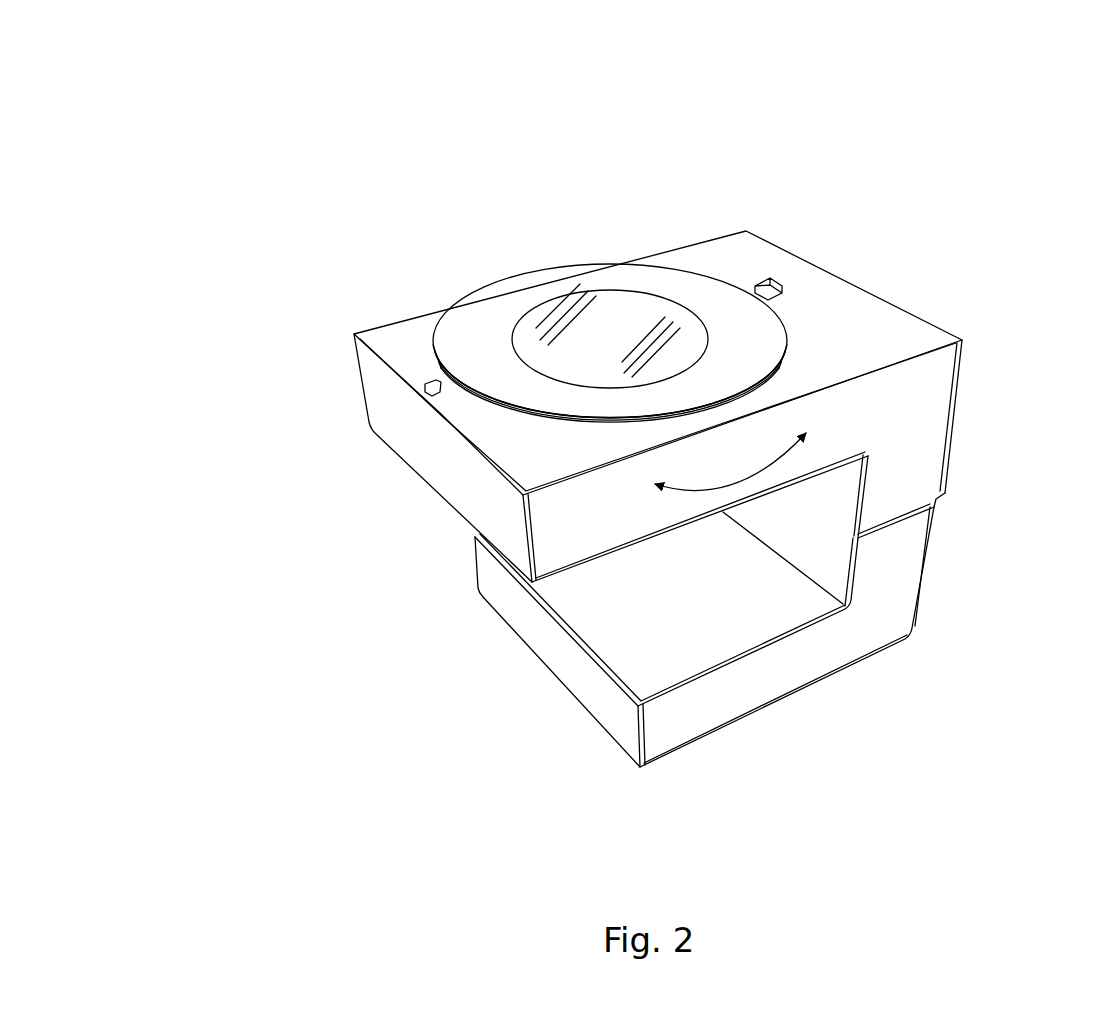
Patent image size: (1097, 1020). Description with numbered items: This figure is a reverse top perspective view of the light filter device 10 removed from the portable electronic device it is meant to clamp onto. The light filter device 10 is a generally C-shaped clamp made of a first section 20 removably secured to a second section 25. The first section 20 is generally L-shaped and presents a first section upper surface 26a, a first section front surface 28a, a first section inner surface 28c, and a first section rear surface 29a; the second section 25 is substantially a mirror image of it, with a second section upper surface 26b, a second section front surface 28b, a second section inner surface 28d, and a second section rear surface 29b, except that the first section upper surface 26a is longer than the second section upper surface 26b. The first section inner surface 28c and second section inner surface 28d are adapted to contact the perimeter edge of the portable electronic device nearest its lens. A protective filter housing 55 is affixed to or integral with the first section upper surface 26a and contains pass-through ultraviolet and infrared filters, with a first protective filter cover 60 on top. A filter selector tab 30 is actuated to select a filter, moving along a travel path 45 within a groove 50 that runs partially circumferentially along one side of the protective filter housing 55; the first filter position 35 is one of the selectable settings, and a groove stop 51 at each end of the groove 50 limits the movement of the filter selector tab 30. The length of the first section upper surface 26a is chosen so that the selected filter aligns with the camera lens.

The light filter device 10 is at (205, 128).
The first section 20 is at (948, 452).
The second section 25 is at (936, 545).
The first section upper surface 26a is at (827, 298).
The second section upper surface 26b is at (628, 615).
The first section front surface 28a is at (483, 498).
The second section front surface 28b is at (600, 720).
The first section inner surface 28c is at (843, 480).
The second section inner surface 28d is at (820, 565).
The first section rear surface 29a is at (555, 537).
The second section rear surface 29b is at (688, 720).
The filter selector tab 30 is at (763, 284).
The first filter position 35 is at (483, 307).
The travel path 45 is at (746, 487).
The groove 50 is at (775, 390).
The groove stop 51 is at (432, 392).
The protective filter housing 55 is at (553, 237).
The first protective filter cover 60 is at (548, 312).